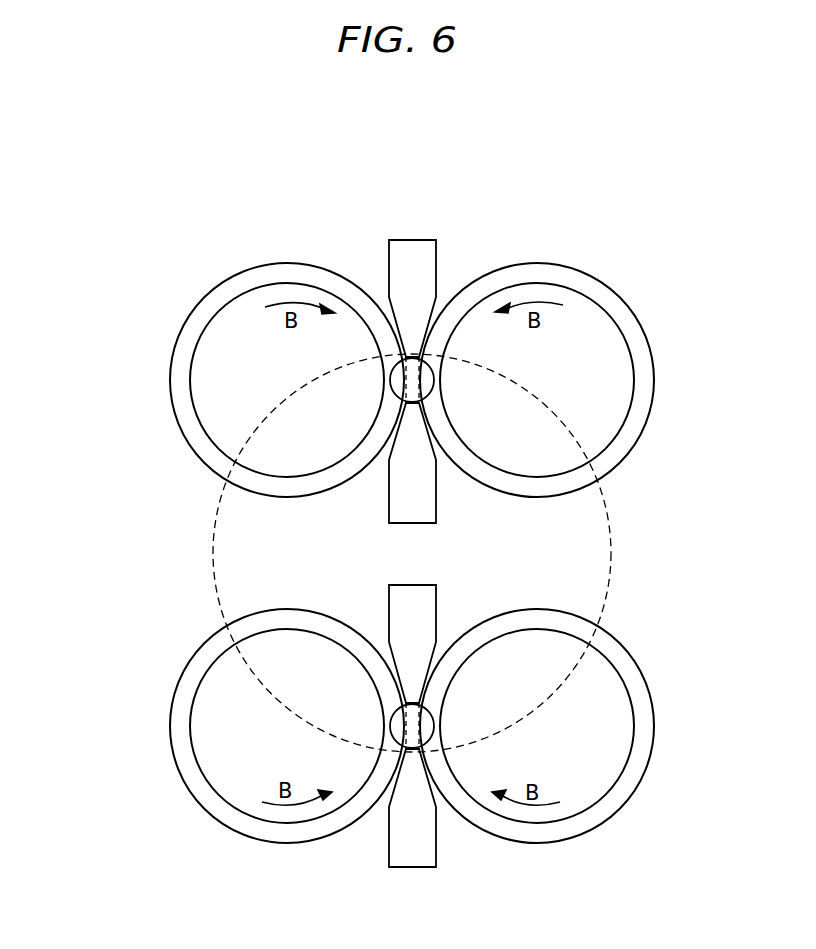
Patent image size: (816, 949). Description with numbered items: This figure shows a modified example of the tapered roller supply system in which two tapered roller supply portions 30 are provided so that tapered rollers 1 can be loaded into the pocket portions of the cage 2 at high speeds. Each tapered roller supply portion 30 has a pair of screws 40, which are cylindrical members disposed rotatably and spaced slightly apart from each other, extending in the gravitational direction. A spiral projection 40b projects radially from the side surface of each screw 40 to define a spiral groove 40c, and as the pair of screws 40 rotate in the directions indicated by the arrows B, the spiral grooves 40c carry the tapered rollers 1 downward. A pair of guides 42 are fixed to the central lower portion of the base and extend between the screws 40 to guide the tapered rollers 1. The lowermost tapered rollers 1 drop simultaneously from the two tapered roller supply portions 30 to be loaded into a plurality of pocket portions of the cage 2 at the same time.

The tapered roller 1 is at (415, 387).
The cage 2 is at (590, 556).
The tapered roller supply portion 30 is at (148, 410).
The screw 40 is at (215, 367).
The spiral projection 40b is at (620, 793).
The spiral groove 40c is at (598, 802).
The guide 42 is at (405, 258).